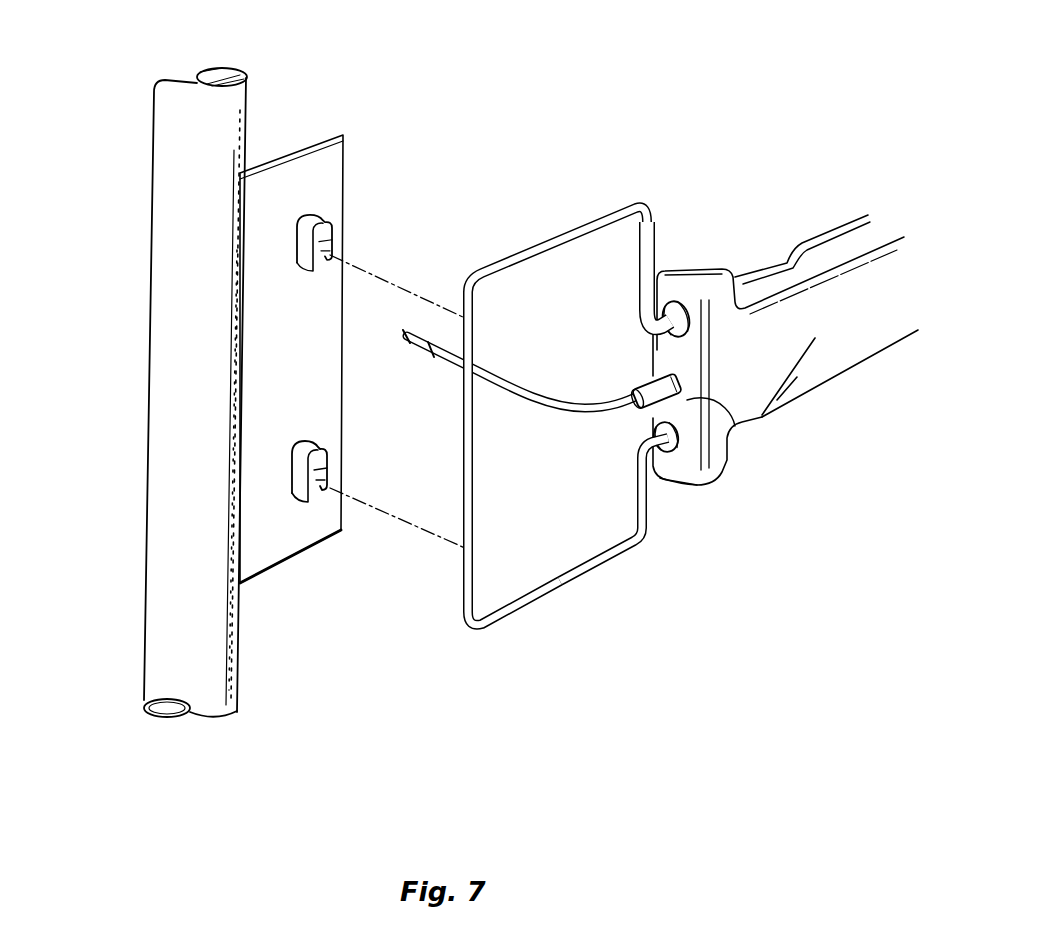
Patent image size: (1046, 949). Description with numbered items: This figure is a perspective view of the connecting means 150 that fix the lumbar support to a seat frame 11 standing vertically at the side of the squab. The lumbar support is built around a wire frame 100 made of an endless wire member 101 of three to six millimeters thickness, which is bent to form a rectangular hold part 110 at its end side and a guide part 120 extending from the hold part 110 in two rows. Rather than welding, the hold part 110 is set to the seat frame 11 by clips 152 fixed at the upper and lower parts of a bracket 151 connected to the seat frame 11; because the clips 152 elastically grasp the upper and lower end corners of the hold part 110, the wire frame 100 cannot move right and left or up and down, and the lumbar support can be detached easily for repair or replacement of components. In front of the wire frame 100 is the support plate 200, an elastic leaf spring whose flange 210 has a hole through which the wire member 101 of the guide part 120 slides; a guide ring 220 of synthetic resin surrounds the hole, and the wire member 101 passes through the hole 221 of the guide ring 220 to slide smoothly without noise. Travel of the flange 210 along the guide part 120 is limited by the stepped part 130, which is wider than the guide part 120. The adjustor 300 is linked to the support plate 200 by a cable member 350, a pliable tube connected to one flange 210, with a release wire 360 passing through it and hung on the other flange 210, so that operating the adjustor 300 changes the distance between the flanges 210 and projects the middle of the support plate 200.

The seat frame 11 is at (163, 382).
The connecting means 150 is at (336, 341).
The bracket 151 is at (277, 172).
The clip 152 is at (318, 214).
The wire frame 100 is at (563, 489).
The hold part 110 is at (495, 622).
The wire member 101 is at (632, 547).
The cable member 350 is at (542, 285).
The release wire 360 is at (424, 333).
The adjustor 300 is at (601, 389).
The support plate 200 is at (784, 390).
The guide part 120 is at (765, 270).
The stepped part 130 is at (793, 250).
The flange 210 is at (747, 424).
The guide ring 220 is at (690, 300).
The hole 221 is at (693, 487).